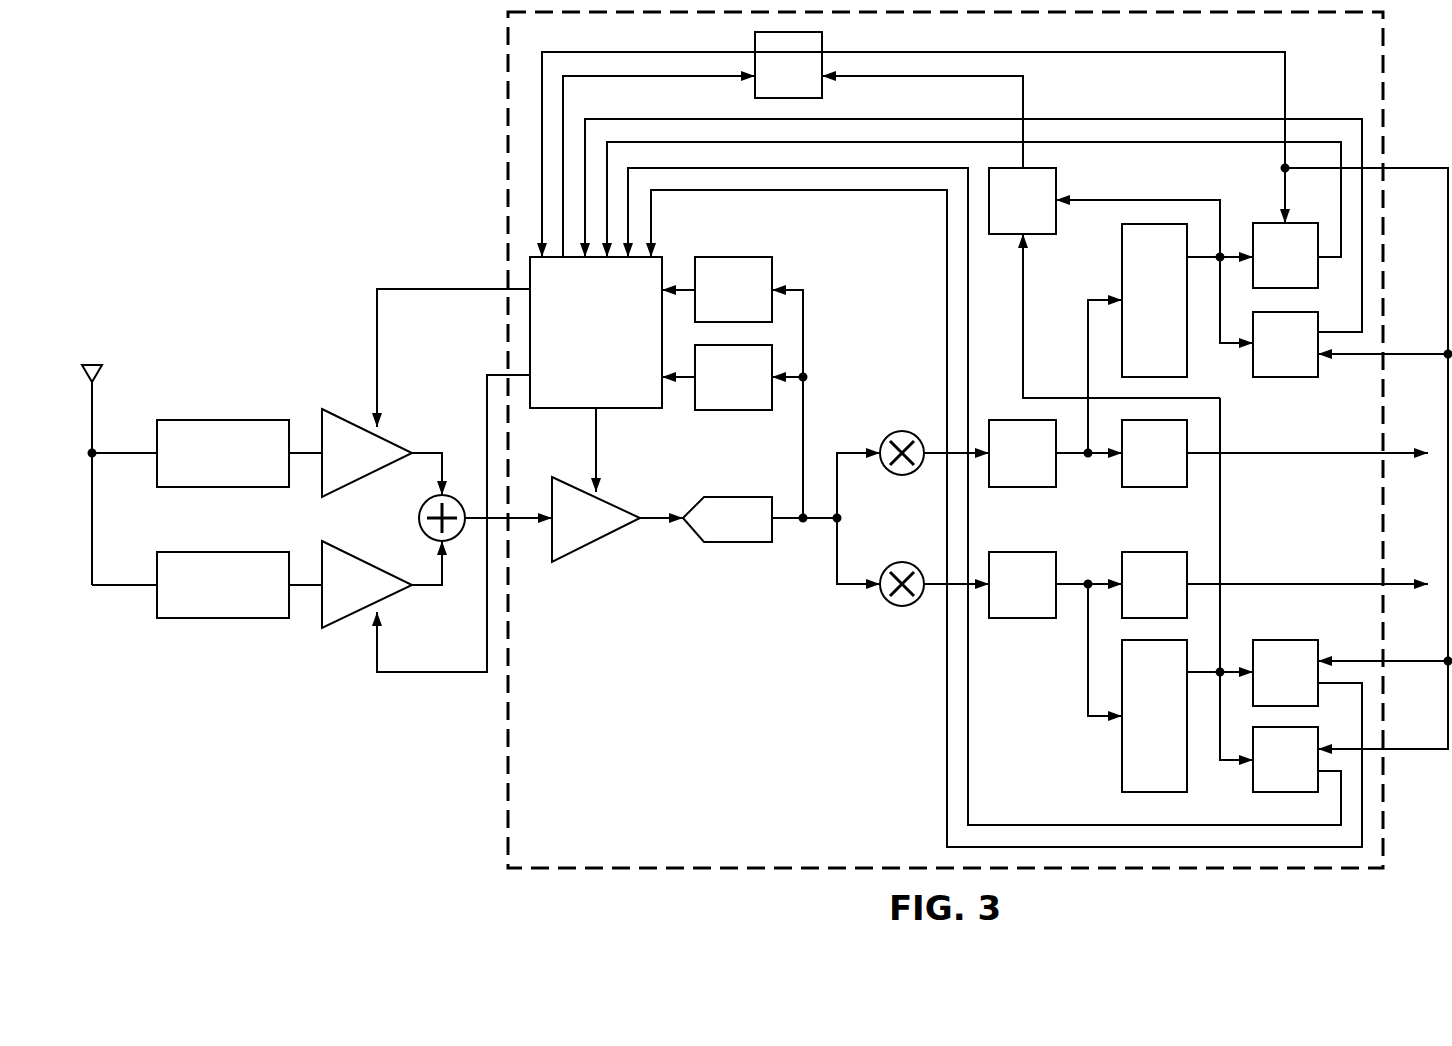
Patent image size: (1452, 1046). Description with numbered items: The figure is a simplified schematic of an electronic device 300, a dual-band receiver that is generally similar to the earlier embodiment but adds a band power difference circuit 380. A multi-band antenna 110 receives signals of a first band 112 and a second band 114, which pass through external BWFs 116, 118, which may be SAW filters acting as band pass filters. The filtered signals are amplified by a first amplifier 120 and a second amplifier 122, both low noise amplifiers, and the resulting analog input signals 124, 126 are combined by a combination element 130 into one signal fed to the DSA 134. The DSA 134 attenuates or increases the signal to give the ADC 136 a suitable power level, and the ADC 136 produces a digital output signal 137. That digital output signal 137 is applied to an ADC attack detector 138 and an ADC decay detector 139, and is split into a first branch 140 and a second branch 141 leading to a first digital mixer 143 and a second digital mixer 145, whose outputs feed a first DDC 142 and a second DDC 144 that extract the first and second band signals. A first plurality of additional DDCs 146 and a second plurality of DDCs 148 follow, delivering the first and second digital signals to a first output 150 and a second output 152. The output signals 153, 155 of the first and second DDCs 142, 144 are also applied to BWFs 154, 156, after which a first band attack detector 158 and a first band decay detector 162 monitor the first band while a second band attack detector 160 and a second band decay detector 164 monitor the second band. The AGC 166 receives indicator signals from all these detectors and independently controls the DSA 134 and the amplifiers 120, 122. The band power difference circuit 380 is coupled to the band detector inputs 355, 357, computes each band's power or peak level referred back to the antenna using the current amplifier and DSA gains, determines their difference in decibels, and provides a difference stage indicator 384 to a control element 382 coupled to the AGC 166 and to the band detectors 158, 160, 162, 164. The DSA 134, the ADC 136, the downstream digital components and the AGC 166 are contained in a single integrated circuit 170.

The electronic device 300 is at (432, 70).
The integrated circuit 170 is at (505, 258).
The antenna 110 is at (102, 372).
The first band 112 is at (120, 450).
The second band 114 is at (120, 588).
The external BWF 116 is at (220, 420).
The external BWF 118 is at (220, 618).
The first amplifier 120 is at (345, 420).
The second amplifier 122 is at (345, 616).
The analog input signal 124 is at (428, 450).
The analog input signal 126 is at (428, 588).
The combination element 130 is at (420, 522).
The DSA 134 is at (607, 541).
The ADC 136 is at (737, 542).
The digital output signal 137 is at (808, 332).
The ADC attack detector 138 is at (715, 306).
The ADC decay detector 139 is at (715, 393).
The first branch 140 is at (862, 452).
The second branch 141 is at (862, 587).
The first DDC 142 is at (1025, 487).
The first digital mixer 143 is at (905, 432).
The second DDC 144 is at (1025, 618).
The second digital mixer 145 is at (905, 606).
The first plurality of additional DDCs 146 is at (1142, 487).
The second plurality of DDCs 148 is at (1165, 552).
The first output 150 is at (1400, 452).
The second output 152 is at (1400, 587).
The first intermediate signal 153 is at (1098, 458).
The BWF 154 is at (1137, 337).
The second intermediate signal 155 is at (1100, 720).
The BWF 156 is at (1137, 755).
The first band attack detector 158 is at (1267, 272).
The second band attack detector 160 is at (1267, 689).
The first band decay detector 162 is at (1267, 361).
The second band decay detector 164 is at (1267, 776).
The AGC 166 is at (578, 368).
The band detector input 355 is at (1145, 200).
The band detector input 357 is at (1230, 763).
The band power difference circuit 380 is at (1005, 217).
The control element 382 is at (770, 81).
The difference stage indicator 384 is at (1025, 97).